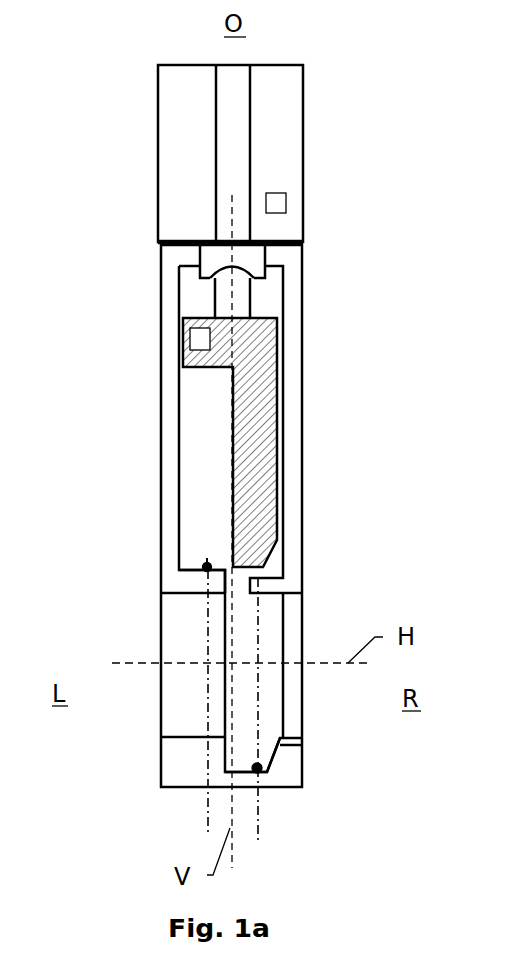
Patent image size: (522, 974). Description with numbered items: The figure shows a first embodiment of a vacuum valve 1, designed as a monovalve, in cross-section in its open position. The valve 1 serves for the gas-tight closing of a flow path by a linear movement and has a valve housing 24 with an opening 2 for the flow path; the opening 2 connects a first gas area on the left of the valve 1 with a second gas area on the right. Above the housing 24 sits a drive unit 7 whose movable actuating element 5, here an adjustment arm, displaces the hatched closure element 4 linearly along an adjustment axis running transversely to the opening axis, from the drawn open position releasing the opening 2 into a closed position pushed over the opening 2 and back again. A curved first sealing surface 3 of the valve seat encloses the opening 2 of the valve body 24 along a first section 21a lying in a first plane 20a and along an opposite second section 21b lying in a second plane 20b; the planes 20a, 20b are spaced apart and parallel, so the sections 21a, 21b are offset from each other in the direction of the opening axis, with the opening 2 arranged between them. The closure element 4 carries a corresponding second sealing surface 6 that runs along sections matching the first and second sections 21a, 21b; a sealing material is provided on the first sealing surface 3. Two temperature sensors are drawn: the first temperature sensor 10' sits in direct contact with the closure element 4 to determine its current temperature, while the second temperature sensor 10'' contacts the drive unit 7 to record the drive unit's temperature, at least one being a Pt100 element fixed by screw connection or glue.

The vacuum valve 1 is at (240, 469).
The drive unit 7 is at (195, 153).
The second temperature sensor 10'' is at (337, 187).
The first temperature sensor 10' is at (141, 327).
The actuating element 5 is at (285, 281).
The valve housing 24 is at (276, 516).
The closure element 4 is at (276, 442).
The second sealing surface 6 is at (233, 488).
The first sealing surface 3 is at (234, 651).
The first section 21a is at (133, 612).
The second section 21b is at (333, 774).
The opening 2 is at (184, 682).
The first plane 20a is at (159, 713).
The second plane 20b is at (305, 726).